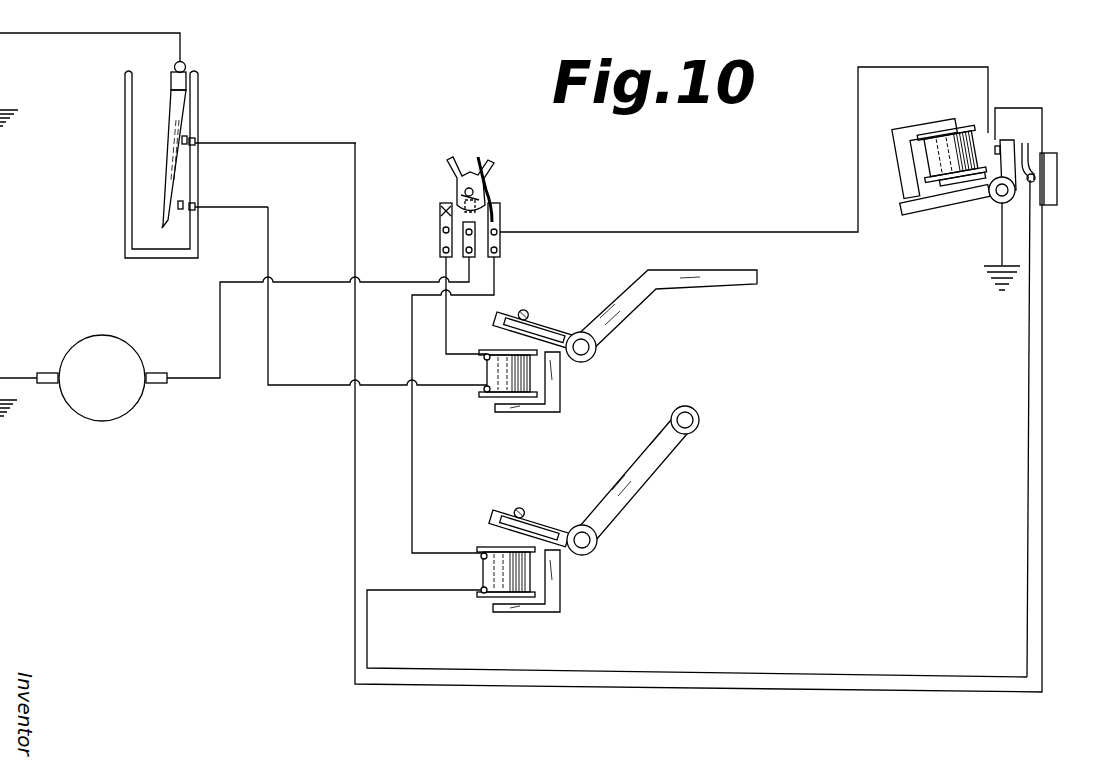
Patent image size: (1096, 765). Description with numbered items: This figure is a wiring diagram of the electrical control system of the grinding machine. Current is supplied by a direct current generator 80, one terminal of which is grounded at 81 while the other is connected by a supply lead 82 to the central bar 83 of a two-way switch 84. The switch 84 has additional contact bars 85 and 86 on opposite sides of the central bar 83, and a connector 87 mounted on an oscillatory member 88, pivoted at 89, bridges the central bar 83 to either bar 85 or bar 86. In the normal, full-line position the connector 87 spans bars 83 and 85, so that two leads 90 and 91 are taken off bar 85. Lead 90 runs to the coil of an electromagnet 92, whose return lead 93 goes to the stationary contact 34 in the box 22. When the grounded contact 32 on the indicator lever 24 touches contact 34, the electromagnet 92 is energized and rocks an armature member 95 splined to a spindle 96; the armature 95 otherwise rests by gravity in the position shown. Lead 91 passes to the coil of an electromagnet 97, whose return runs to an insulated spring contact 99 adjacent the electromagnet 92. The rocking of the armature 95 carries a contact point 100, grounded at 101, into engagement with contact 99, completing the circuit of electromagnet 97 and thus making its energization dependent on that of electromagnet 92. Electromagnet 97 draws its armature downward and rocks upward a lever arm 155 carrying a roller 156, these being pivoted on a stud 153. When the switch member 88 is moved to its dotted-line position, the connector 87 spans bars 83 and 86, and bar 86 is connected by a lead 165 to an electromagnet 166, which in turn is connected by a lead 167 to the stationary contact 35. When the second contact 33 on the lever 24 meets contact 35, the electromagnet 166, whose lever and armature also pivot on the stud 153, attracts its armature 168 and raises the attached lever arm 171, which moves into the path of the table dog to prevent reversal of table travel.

The box 22 is at (127, 186).
The indicator lever 24 is at (172, 110).
The contact 32 is at (184, 138).
The second contact 33 is at (176, 203).
The stationary terminal contact 34 is at (190, 139).
The stationary terminal contact 35 is at (190, 204).
The direct current generator 80 is at (115, 408).
The ground 81 is at (8, 412).
The supply lead 82 is at (219, 312).
The central bar 83 is at (496, 232).
The two-way switch 84 is at (493, 177).
The contact bar 85 is at (500, 243).
The contact bar 86 is at (440, 237).
The connector 87 is at (478, 233).
The oscillatory member 88 is at (479, 157).
The pivot 89 is at (464, 192).
The lead 90 is at (735, 232).
The lead 91 is at (498, 279).
The electromagnet 92 is at (940, 163).
The return lead 93 is at (310, 143).
The armature member 95 is at (930, 210).
The spindle 96 is at (996, 196).
The electromagnet 97 is at (520, 578).
The insulated spring contact 99 is at (1028, 148).
The contact point 100 is at (1006, 140).
The ground 101 is at (992, 283).
The pivot stud 153 is at (582, 347).
The lever arm 155 is at (665, 465).
The roller 156 is at (700, 420).
The lead 165 is at (446, 310).
The electromagnet 166 is at (520, 380).
The lead 167 is at (333, 384).
The armature 168 is at (543, 327).
The lever arm 171 is at (760, 277).